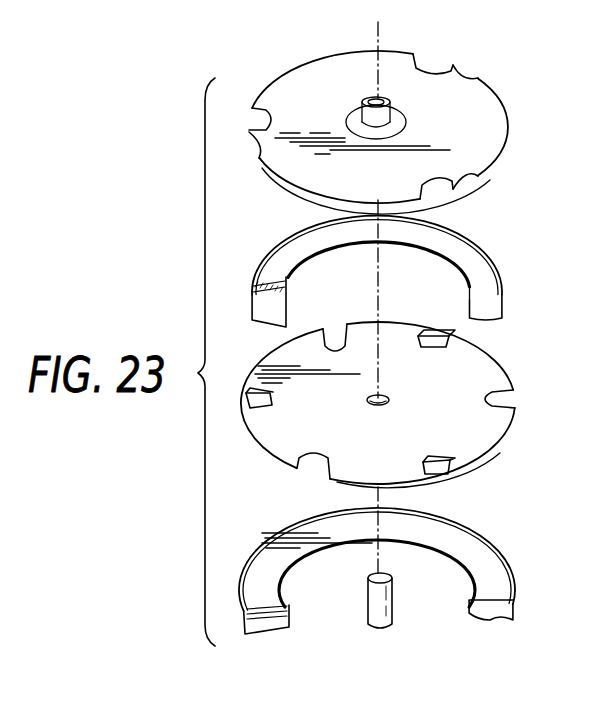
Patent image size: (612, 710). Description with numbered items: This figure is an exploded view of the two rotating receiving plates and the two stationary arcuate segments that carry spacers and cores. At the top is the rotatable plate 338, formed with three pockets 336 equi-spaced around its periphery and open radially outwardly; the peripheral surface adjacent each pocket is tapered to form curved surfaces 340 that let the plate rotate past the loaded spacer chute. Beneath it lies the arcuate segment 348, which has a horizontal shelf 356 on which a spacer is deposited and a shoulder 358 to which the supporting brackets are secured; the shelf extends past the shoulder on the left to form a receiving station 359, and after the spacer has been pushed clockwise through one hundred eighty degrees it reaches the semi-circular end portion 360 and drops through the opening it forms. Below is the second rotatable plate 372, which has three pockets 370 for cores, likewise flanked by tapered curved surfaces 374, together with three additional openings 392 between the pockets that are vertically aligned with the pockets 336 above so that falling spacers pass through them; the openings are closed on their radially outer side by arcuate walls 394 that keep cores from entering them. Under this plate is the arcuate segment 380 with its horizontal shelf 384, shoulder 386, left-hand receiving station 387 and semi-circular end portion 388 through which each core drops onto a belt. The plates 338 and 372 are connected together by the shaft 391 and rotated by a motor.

The pocket 336 is at (252, 108).
The rotatable plate 338 is at (493, 125).
The curved surfaces 340 is at (262, 108).
The arcuate segment 348 is at (401, 288).
The horizontal shelf 356 is at (462, 268).
The shoulder 358 is at (474, 248).
The receiving station 359 is at (264, 325).
The semi-circular end portion 360 is at (495, 312).
The pocket 370 is at (508, 400).
The rotatable plate 372 is at (497, 452).
The curved surfaces 374 is at (515, 388).
The arcuate segment 380 is at (410, 597).
The horizontal shelf 384 is at (452, 578).
The shoulder 386 is at (476, 530).
The receiving station 387 is at (278, 636).
The semi-circular end portion 388 is at (502, 628).
The shaft 391 is at (382, 630).
The openings 392 is at (433, 348).
The arcuate walls 394 is at (444, 330).